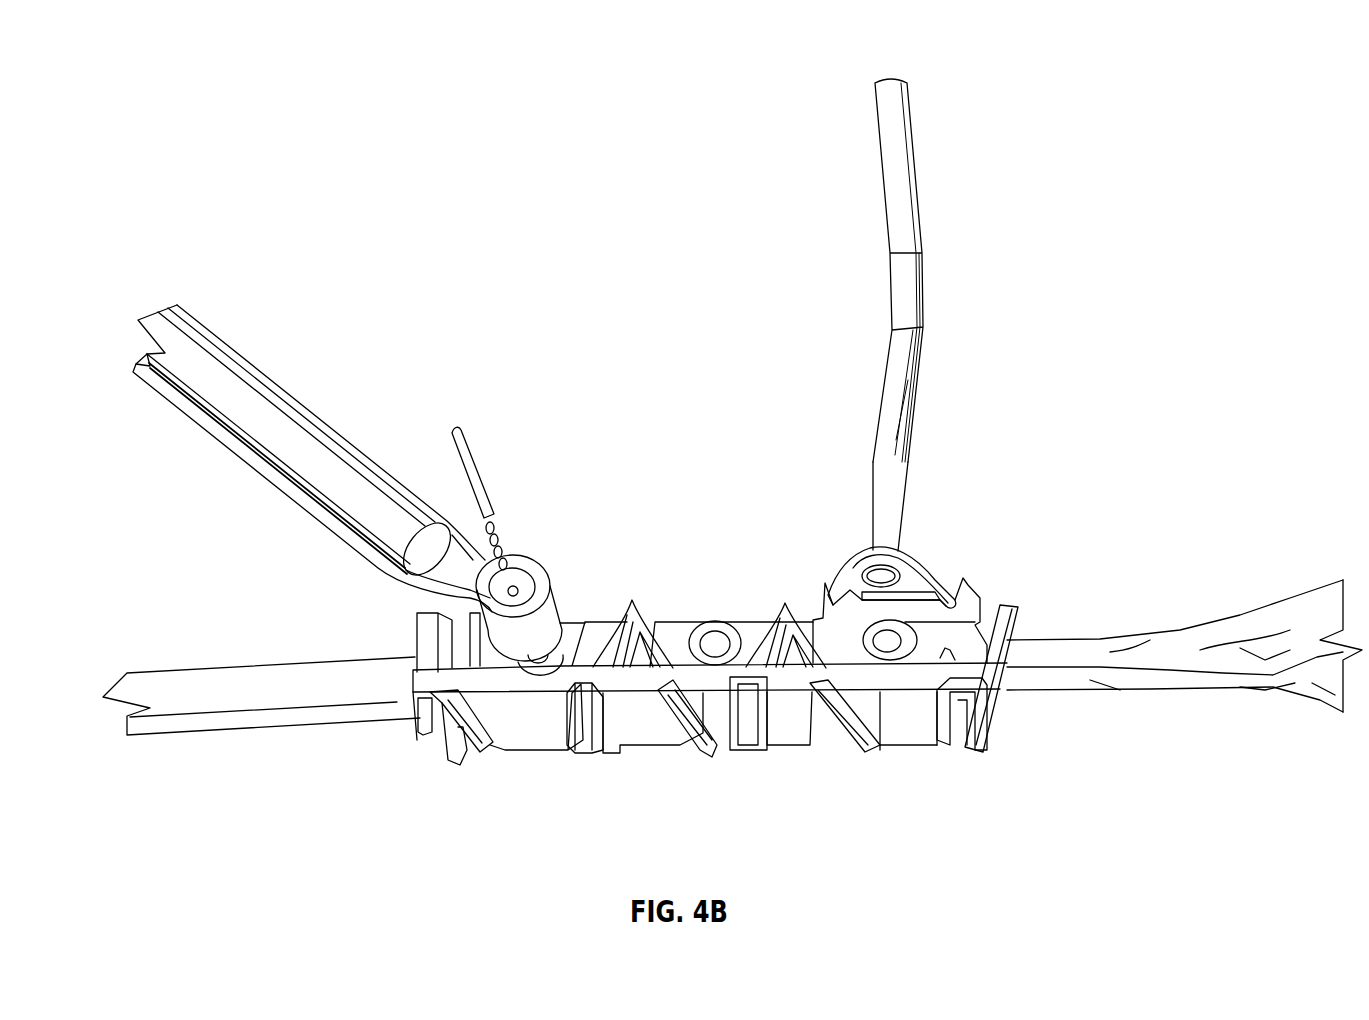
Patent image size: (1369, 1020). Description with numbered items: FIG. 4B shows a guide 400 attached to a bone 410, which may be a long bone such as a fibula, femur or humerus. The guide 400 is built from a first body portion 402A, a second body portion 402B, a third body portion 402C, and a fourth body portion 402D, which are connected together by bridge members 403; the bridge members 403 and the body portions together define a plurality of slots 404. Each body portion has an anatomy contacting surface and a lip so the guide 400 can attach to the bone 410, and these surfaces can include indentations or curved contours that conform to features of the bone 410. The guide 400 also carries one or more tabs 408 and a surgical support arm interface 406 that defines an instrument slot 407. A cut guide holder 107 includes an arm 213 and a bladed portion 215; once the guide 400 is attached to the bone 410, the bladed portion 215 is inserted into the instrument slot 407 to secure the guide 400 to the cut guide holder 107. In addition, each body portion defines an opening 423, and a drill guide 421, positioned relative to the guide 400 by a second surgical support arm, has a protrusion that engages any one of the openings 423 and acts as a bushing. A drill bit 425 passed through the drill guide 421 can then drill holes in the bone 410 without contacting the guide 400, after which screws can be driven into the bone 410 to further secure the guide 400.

The cut guide holder 107 is at (935, 371).
The arm 213 is at (921, 373).
The bladed portion 215 is at (910, 548).
The guide 400 is at (736, 685).
The first body portion 402A is at (555, 733).
The second body portion 402B is at (660, 747).
The third body portion 402C is at (808, 745).
The fourth body portion 402D is at (923, 747).
The bridge member 403 is at (632, 603).
The slot 404 is at (488, 745).
The surgical support arm interface 406 is at (901, 559).
The instrument slot 407 is at (950, 577).
The tab 408 is at (428, 738).
The bone 410 is at (1235, 640).
The drill guide 421 is at (296, 353).
The opening 423 is at (712, 620).
The drill bit 425 is at (477, 468).